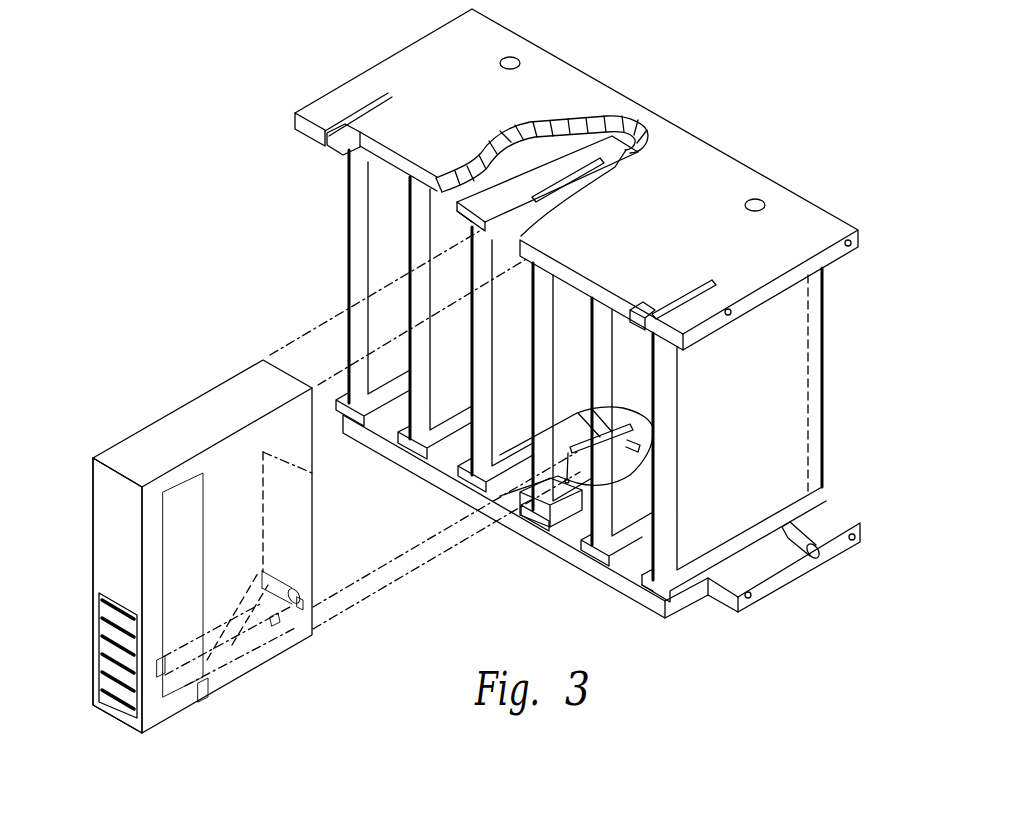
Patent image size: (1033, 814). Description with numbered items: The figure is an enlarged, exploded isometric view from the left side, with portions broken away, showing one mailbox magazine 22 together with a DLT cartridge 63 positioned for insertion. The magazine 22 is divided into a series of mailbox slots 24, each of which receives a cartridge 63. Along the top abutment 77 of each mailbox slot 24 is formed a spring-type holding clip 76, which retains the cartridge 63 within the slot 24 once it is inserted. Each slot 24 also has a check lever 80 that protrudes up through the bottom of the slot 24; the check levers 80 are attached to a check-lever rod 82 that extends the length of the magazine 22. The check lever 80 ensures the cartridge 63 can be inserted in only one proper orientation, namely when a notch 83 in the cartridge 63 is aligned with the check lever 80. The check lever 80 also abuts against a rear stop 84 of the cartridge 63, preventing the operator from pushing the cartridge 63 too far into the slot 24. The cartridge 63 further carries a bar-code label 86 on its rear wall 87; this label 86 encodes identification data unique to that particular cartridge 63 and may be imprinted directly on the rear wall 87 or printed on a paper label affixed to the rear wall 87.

The mailbox magazine 22 is at (628, 80).
The mailbox slot 24 is at (387, 207).
The DLT cartridge 63 is at (137, 396).
The spring-type holding clip 76 is at (637, 157).
The top abutment 77 is at (493, 227).
The check lever 80 is at (577, 472).
The check-lever rod 82 is at (787, 560).
The notch 83 is at (277, 630).
The rear stop 84 is at (208, 698).
The bar-code label 86 is at (133, 720).
The rear wall 87 is at (103, 520).